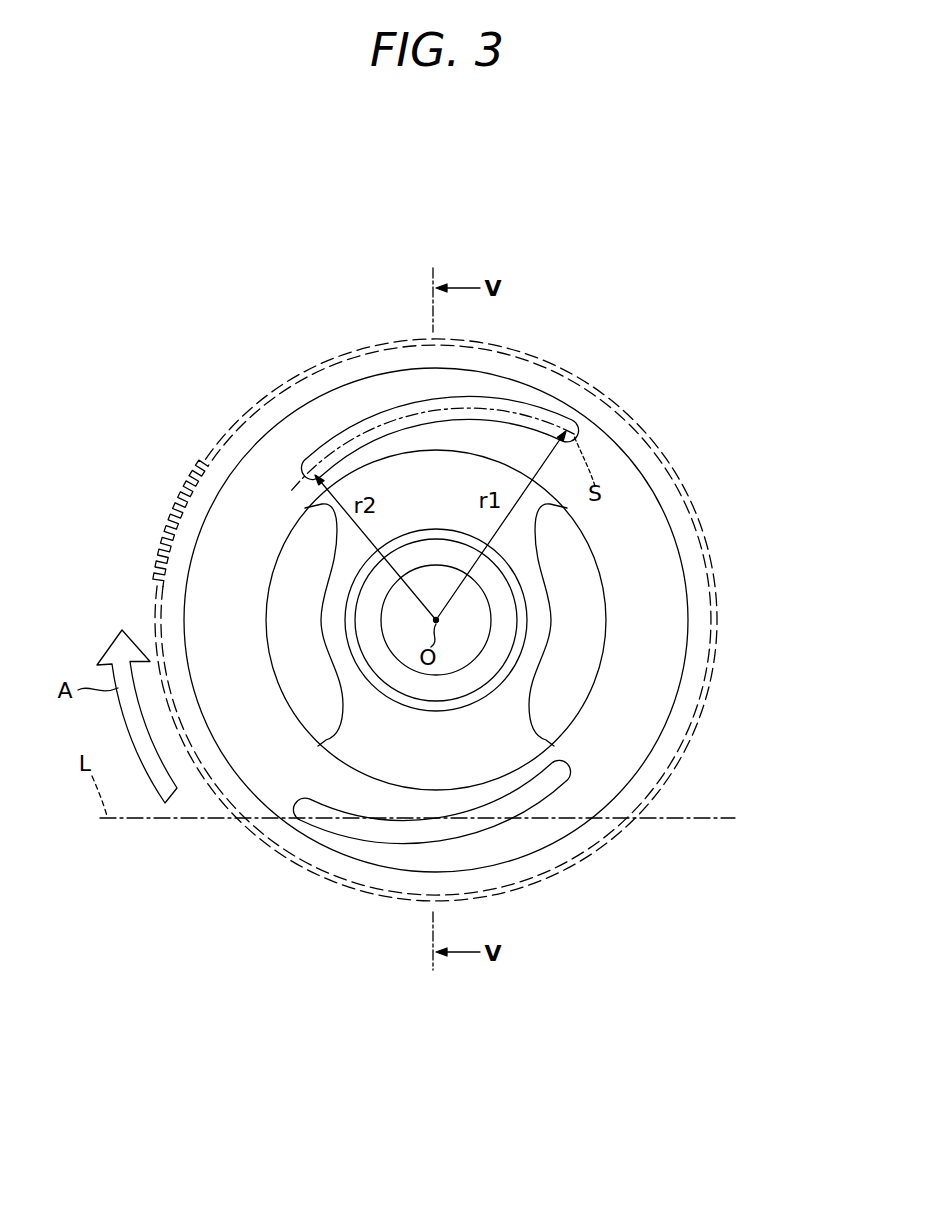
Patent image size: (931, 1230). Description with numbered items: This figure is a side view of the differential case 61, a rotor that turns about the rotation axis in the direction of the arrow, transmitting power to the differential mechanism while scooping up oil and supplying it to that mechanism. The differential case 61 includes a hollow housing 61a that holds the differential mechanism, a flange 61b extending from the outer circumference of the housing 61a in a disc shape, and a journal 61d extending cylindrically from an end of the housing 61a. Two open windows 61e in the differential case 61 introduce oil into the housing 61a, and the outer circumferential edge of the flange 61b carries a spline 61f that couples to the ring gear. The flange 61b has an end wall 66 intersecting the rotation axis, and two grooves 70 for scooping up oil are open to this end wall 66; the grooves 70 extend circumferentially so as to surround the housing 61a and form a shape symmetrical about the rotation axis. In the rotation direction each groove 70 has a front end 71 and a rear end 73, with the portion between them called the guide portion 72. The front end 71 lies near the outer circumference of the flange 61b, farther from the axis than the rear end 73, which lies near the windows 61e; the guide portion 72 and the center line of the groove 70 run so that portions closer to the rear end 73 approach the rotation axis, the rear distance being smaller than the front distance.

The differential case 61 is at (650, 430).
The housing 61a is at (513, 707).
The flange 61b is at (288, 798).
The journal 61d is at (517, 633).
The window 61e is at (305, 508).
The spline 61f is at (172, 537).
The end wall 66 is at (295, 437).
The groove 70 is at (327, 214).
The front end 71 is at (545, 411).
The guide portion 72 is at (409, 412).
The rear end 73 is at (317, 458).